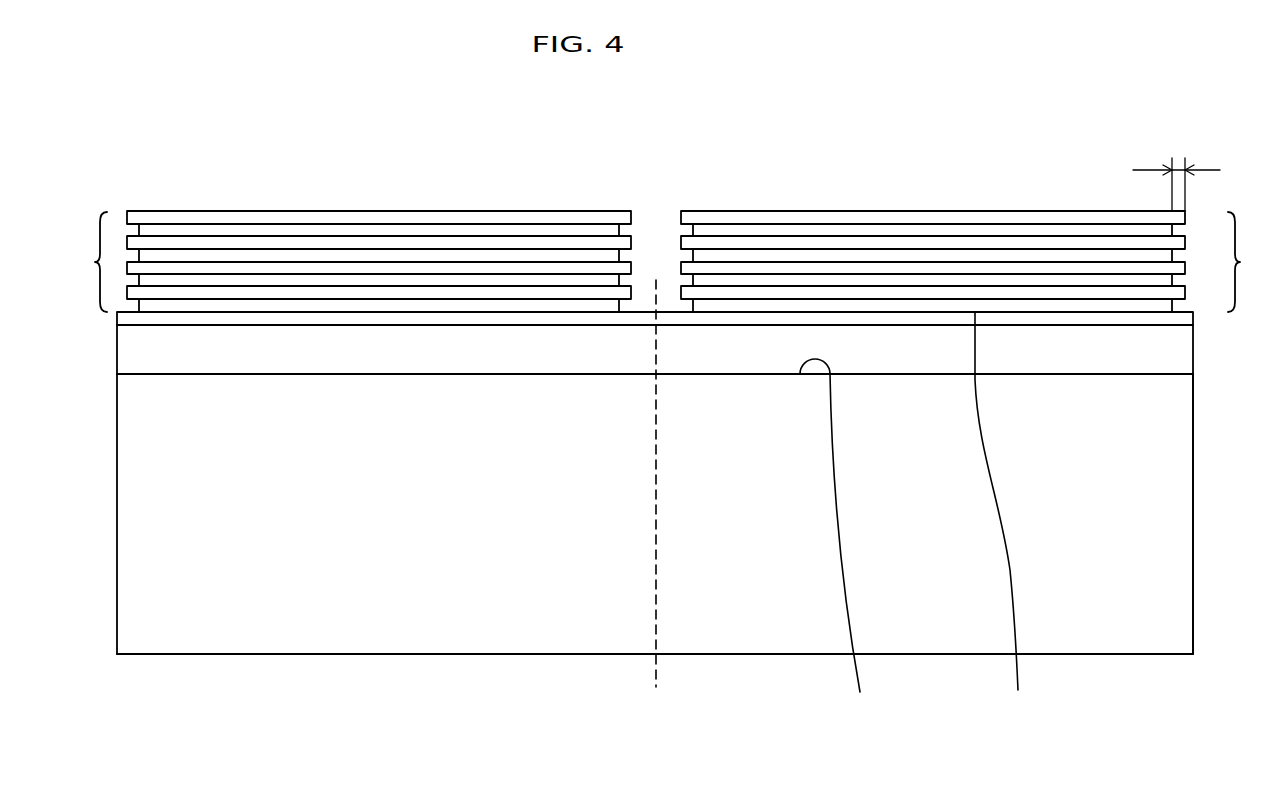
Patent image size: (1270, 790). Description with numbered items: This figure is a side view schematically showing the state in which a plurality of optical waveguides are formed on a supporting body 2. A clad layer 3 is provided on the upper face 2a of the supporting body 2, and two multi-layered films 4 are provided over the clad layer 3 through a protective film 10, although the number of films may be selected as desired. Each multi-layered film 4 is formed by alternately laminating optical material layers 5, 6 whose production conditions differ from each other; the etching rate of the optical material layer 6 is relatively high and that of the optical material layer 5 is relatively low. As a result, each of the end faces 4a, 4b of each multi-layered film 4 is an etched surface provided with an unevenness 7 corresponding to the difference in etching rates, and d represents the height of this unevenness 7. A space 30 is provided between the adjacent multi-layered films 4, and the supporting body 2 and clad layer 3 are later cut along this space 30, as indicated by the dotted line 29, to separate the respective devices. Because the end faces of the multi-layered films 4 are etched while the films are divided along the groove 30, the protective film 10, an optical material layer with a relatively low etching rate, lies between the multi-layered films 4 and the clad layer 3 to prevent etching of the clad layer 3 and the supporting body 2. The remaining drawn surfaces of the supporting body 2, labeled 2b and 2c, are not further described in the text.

The supporting body 2 is at (1186, 537).
The upper face of the supporting body 2a is at (837, 539).
The bottom surface of substrate 2b is at (1105, 654).
The side surface of substrate 2c is at (1193, 447).
The clad layer 3 is at (1185, 348).
The multi-layered film 4 is at (669, 262).
The end face of the multi-layered film 4a is at (1185, 218).
The end face of the multi-layered film 4b is at (681, 217).
The optical material layer 5 is at (1172, 268).
The optical material layer 6 is at (1172, 256).
The unevenness 7 is at (619, 256).
The protective film 10 is at (1003, 515).
The dotted line 29 is at (656, 675).
The space 30 is at (652, 182).
The height of the unevenness d is at (1178, 172).